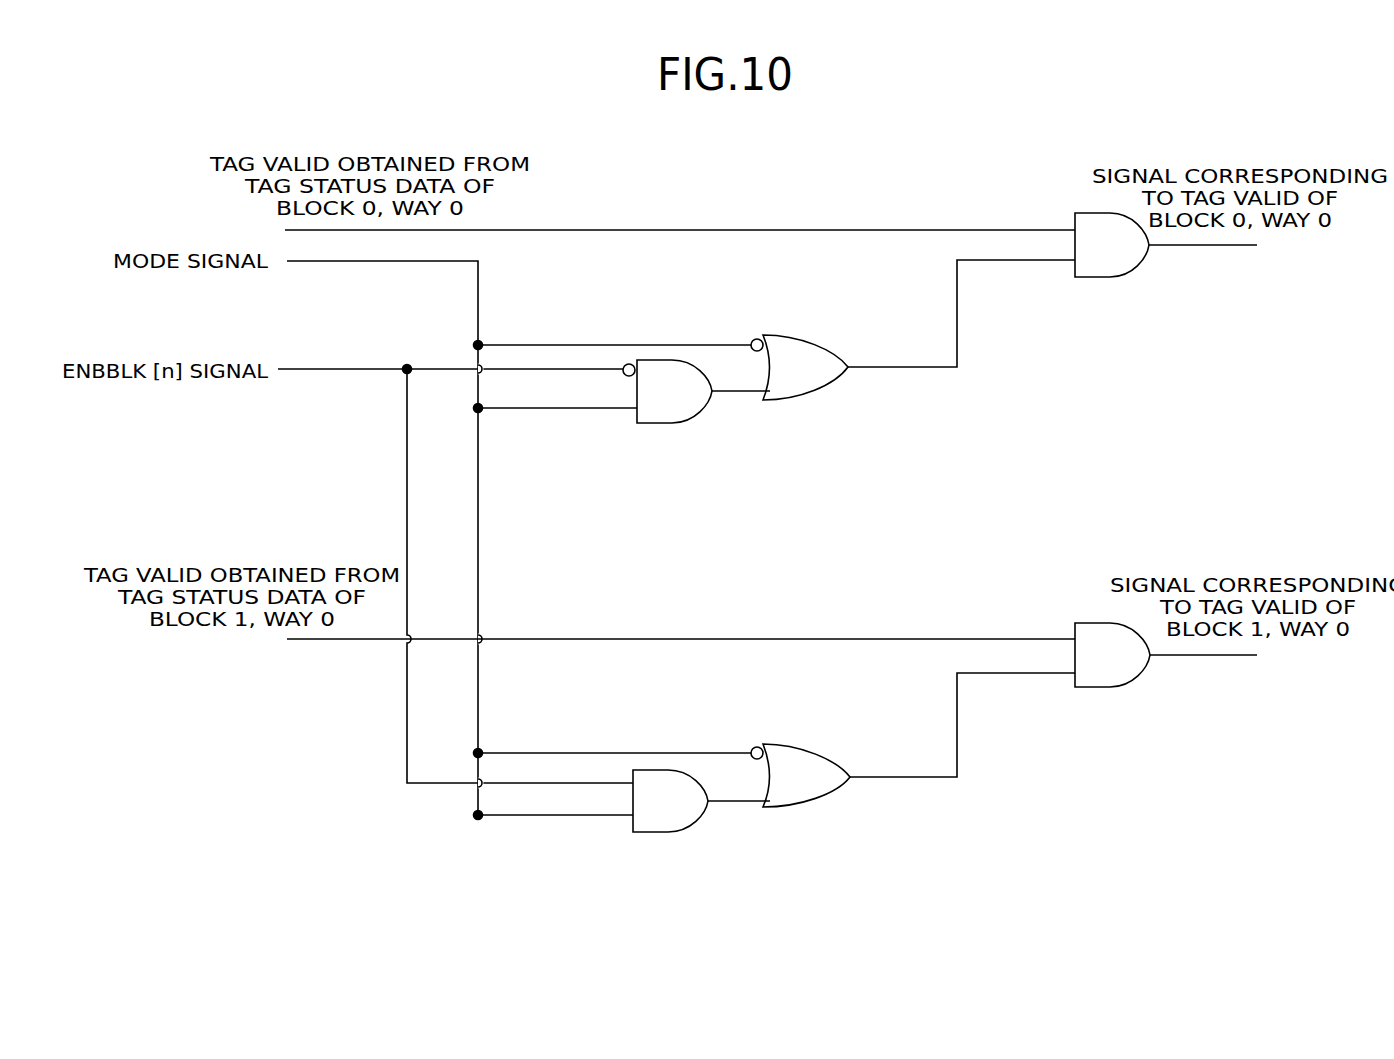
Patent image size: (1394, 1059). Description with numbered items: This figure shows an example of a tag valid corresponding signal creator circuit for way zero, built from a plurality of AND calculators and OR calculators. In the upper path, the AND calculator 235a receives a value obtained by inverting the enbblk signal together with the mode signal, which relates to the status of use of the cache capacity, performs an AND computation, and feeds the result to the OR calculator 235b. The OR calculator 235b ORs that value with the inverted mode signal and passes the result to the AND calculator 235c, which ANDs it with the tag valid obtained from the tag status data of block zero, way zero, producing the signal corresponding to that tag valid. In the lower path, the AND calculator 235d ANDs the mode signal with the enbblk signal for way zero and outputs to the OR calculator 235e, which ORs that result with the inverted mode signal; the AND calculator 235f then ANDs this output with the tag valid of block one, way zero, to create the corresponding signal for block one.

The AND calculator 235a is at (688, 422).
The OR calculator 235b is at (810, 401).
The AND calculator 235c is at (1126, 273).
The AND calculator 235d is at (688, 831).
The OR calculator 235e is at (812, 808).
The AND calculator 235f is at (1126, 684).